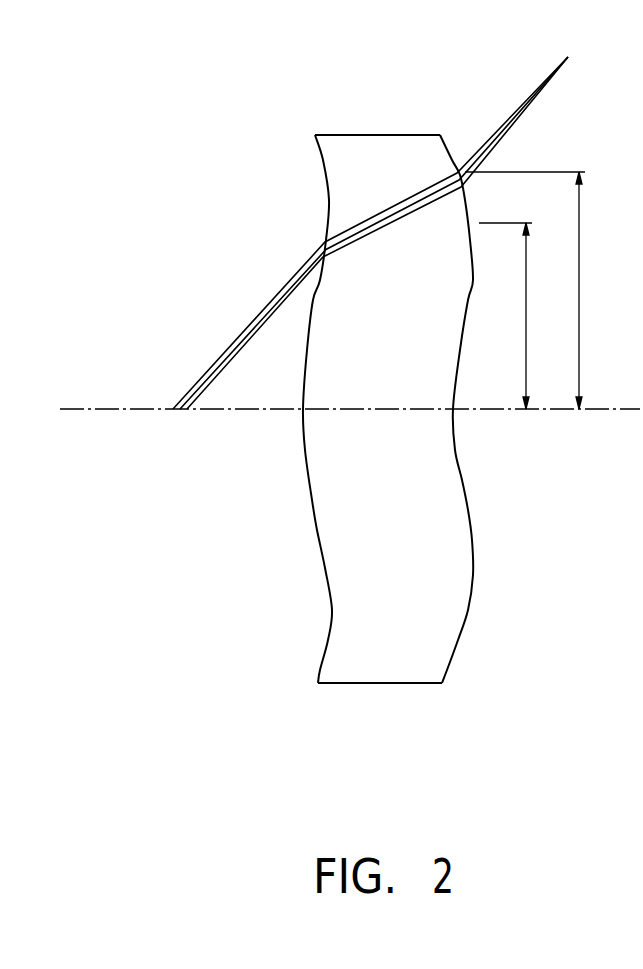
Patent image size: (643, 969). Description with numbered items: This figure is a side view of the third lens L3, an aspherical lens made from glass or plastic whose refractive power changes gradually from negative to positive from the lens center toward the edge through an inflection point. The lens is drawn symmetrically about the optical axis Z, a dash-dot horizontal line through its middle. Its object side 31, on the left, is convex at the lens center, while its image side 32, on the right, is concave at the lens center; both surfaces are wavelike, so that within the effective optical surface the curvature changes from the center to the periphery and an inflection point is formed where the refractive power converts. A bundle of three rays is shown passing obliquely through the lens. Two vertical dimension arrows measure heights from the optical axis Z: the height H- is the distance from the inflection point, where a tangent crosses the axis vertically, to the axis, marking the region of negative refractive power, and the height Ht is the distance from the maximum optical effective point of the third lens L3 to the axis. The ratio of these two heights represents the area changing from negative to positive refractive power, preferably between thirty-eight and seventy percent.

The third lens L3 is at (395, 462).
The object side 31 is at (325, 568).
The image side 32 is at (473, 577).
The optical axis Z is at (339, 412).
The maximum optical effective height Ht is at (525, 290).
The height of the lens with negative refractive power H- is at (505, 316).